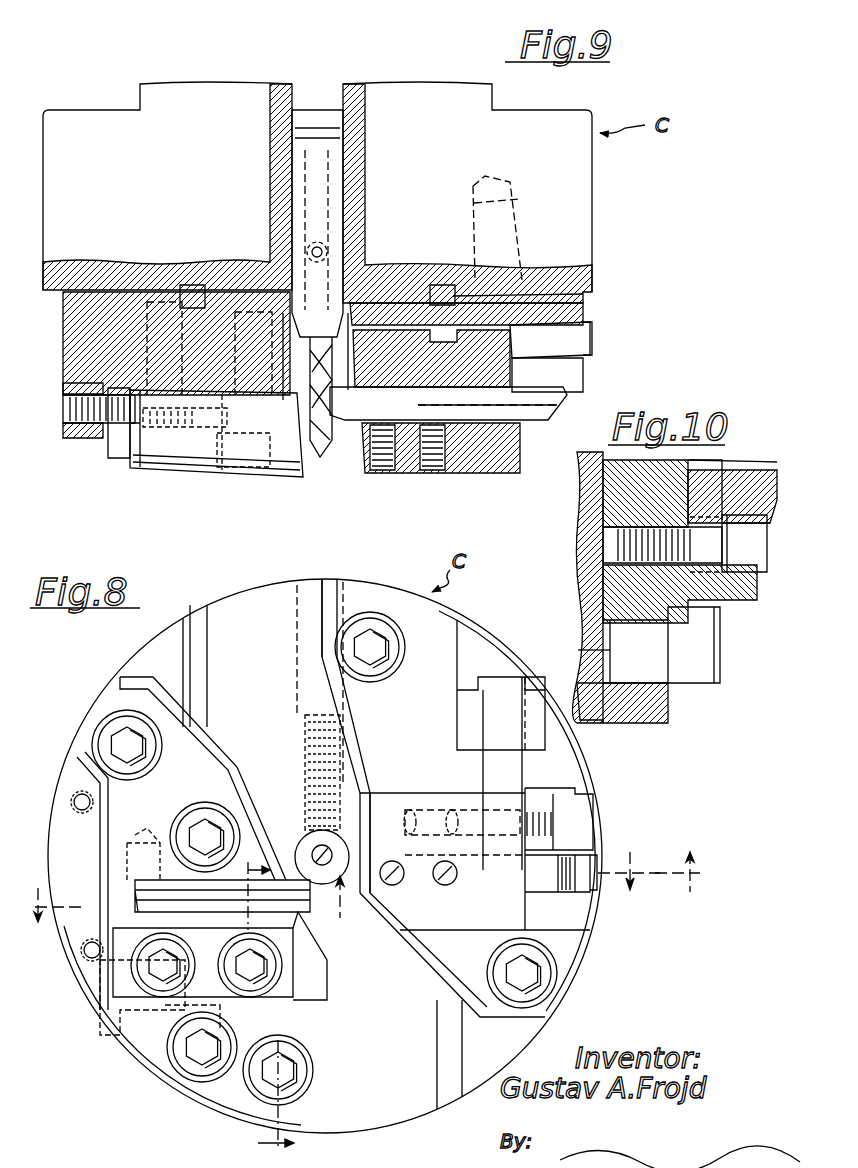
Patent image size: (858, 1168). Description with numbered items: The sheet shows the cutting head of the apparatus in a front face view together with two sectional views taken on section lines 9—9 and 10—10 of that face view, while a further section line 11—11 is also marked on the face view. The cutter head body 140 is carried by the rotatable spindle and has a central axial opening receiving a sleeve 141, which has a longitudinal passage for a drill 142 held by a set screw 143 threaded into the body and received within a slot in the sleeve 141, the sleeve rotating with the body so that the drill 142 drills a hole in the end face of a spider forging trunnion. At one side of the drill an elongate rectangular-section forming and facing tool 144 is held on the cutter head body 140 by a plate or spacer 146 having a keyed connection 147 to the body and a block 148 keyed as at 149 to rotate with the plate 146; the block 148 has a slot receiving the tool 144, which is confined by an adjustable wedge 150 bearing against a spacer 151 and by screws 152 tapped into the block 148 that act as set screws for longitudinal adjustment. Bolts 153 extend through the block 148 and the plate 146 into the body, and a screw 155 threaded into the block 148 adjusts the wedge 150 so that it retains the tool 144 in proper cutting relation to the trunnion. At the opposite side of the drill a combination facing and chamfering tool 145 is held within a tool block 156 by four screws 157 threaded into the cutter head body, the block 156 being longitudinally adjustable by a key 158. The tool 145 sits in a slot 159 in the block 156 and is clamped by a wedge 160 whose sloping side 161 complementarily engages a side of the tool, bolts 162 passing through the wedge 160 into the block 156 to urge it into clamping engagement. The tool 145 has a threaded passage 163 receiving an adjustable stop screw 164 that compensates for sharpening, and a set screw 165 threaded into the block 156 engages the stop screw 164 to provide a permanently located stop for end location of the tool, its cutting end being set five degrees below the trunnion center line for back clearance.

In FIG. 9, the cutter head body 140 is at (592, 212).
In FIG. 8, the cutter head body 140 is at (258, 592).
In FIG. 9, the sleeve 141 is at (345, 152).
In FIG. 8, the sleeve 141 is at (300, 838).
In FIG. 9, the drill 142 is at (326, 462).
In FIG. 8, the drill 142 is at (333, 850).
In FIG. 9, the set screw 143 is at (350, 235).
In FIG. 8, the set screw 143 is at (352, 756).
In FIG. 9, the forming and facing tool 144 is at (570, 398).
In FIG. 8, the forming and facing tool 144 is at (530, 900).
In FIG. 9, the combination facing and chamfering tool 145 is at (172, 482).
In FIG. 10, the combination facing and chamfering tool 145 is at (762, 468).
In FIG. 8, the combination facing and chamfering tool 145 is at (130, 897).
In FIG. 9, the plate or spacer 146 is at (585, 296).
In FIG. 9, the key 147 is at (440, 283).
In FIG. 9, the tool block 148 is at (520, 344).
In FIG. 8, the tool block 148 is at (412, 795).
In FIG. 9, the key 149 is at (431, 358).
In FIG. 9, the wedge 150 is at (586, 364).
In FIG. 8, the wedge 150 is at (586, 862).
In FIG. 9, the spacer 151 is at (592, 328).
In FIG. 8, the spacer 151 is at (600, 892).
In FIG. 9, the screws 152 is at (432, 465).
In FIG. 9, the bolts 153 is at (528, 440).
In FIG. 8, the bolts 153 is at (387, 668).
In FIG. 8, the screw 155 is at (555, 818).
In FIG. 9, the tool block 156 is at (75, 332).
In FIG. 10, the tool block 156 is at (605, 516).
In FIG. 8, the tool block 156 is at (125, 690).
In FIG. 8, the screws 157 is at (192, 810).
In FIG. 9, the key 158 is at (196, 284).
In FIG. 8, the key 158 is at (205, 717).
In FIG. 10, the slot 159 is at (712, 470).
In FIG. 8, the slot 159 is at (135, 834).
In FIG. 10, the wedge 160 is at (705, 580).
In FIG. 8, the wedge 160 is at (295, 975).
In FIG. 10, the sloping side 161 is at (700, 510).
In FIG. 9, the bolts 162 is at (265, 455).
In FIG. 10, the bolts 162 is at (762, 553).
In FIG. 8, the bolts 162 is at (238, 985).
In FIG. 9, the threaded passage 163 is at (205, 445).
In FIG. 9, the adjustable stop screw 164 is at (128, 425).
In FIG. 10, the adjustable stop screw 164 is at (758, 508).
In FIG. 9, the set screw 165 is at (66, 420).
In FIG. 8, the section line 9— 9 is at (346, 900).
In FIG. 8, the section line 10— 10 is at (265, 999).
In FIG. 8, the section line 11— 11 is at (517, 895).